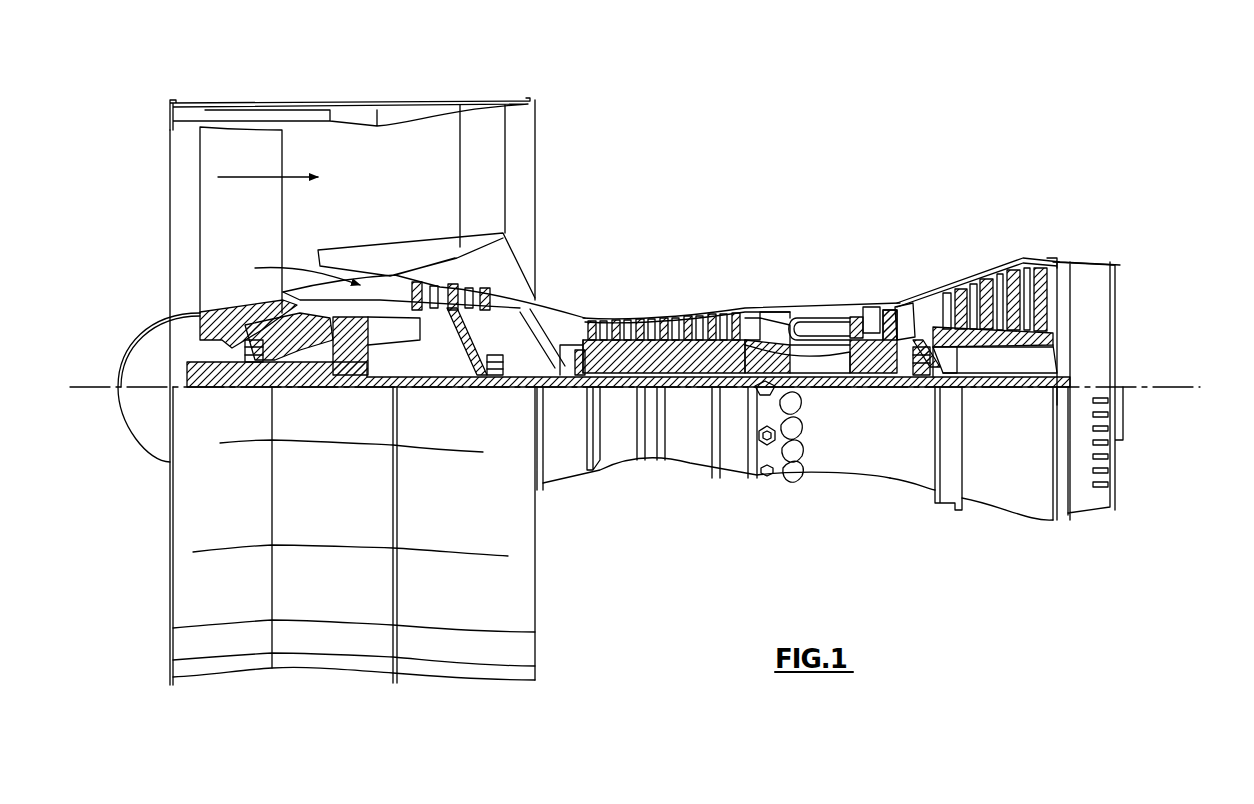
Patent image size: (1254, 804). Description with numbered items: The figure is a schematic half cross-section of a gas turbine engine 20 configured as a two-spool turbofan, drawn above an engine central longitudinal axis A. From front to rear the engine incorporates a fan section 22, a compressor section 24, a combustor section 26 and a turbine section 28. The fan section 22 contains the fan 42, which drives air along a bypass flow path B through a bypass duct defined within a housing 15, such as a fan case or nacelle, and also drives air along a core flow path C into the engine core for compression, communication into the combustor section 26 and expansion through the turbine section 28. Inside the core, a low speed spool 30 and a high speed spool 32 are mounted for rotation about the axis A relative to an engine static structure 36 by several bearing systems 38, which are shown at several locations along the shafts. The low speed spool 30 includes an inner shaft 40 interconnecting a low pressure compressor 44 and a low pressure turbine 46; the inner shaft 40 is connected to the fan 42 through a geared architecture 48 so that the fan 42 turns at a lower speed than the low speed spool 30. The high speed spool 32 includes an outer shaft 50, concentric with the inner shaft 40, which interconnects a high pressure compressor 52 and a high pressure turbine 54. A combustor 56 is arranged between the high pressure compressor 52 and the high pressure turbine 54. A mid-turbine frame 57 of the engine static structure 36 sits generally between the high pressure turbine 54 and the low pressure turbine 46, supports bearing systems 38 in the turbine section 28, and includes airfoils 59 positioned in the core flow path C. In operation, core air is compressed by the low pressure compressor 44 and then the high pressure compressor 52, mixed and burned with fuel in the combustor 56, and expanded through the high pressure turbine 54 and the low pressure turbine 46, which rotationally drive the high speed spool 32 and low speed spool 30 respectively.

The housing 15 is at (348, 104).
The gas turbine engine 20 is at (812, 157).
The fan section 22 is at (283, 90).
The compressor section 24 is at (580, 296).
The combustor section 26 is at (805, 285).
The turbine section 28 is at (952, 247).
The low speed spool 30 is at (690, 392).
The high speed spool 32 is at (735, 335).
The engine static structure 36 is at (732, 477).
The bearing systems 38 is at (493, 375).
The inner shaft 40 is at (552, 390).
The fan 42 is at (256, 232).
The low pressure compressor 44 is at (455, 325).
The low pressure turbine 46 is at (1000, 280).
The geared architecture 48 is at (360, 365).
The outer shaft 50 is at (808, 380).
The high pressure compressor 52 is at (668, 360).
The high pressure turbine 54 is at (868, 307).
The combustor 56 is at (807, 330).
The mid-turbine frame 57 is at (910, 303).
The airfoils 59 is at (947, 347).
The engine central longitudinal axis A is at (1198, 387).
The bypass flow path B is at (256, 177).
The core flow path C is at (298, 271).